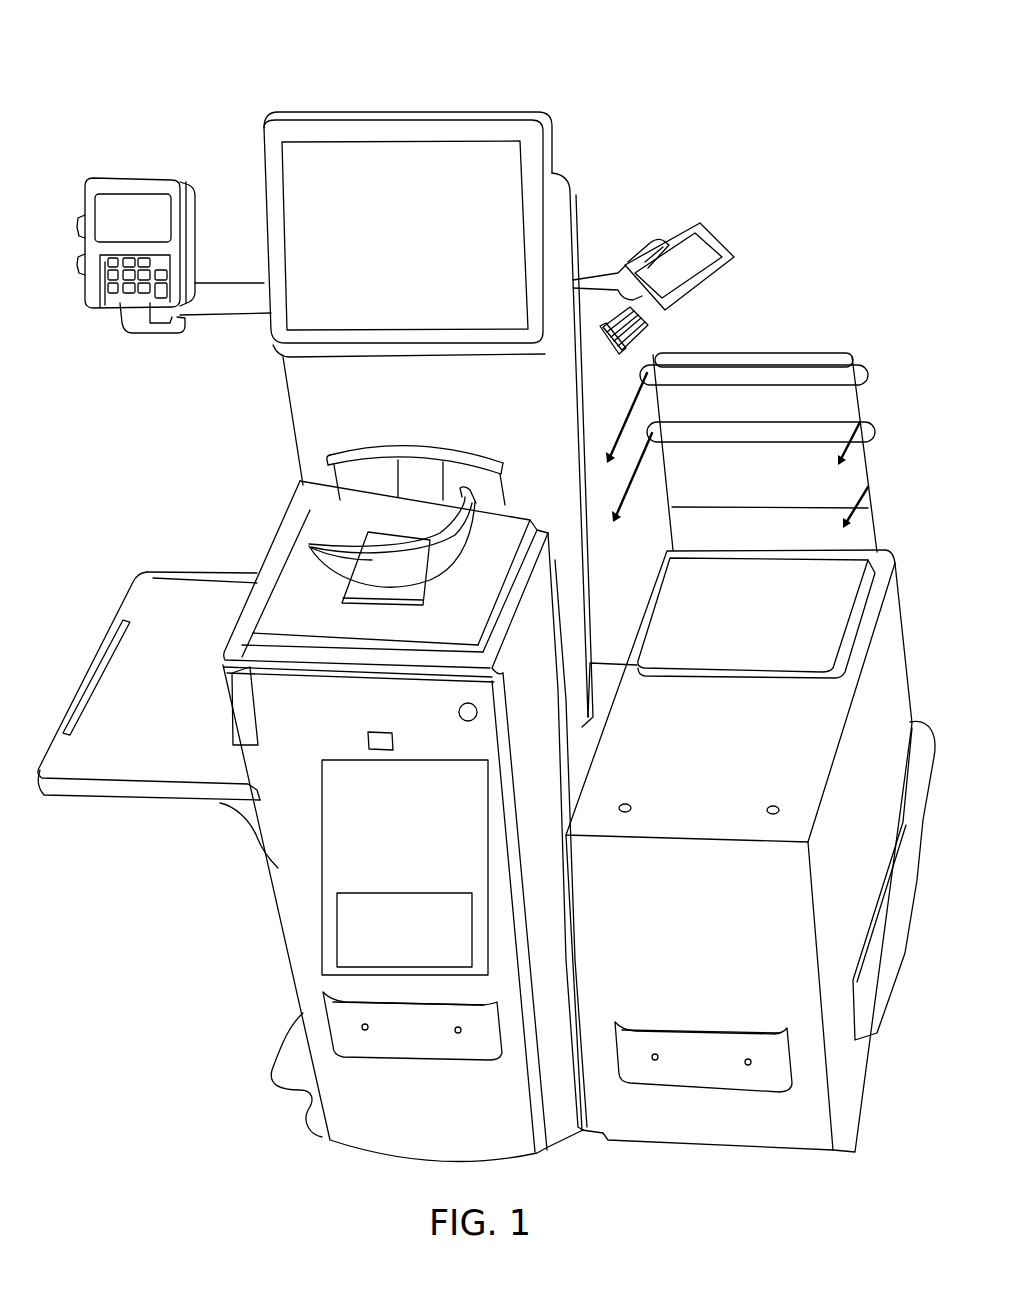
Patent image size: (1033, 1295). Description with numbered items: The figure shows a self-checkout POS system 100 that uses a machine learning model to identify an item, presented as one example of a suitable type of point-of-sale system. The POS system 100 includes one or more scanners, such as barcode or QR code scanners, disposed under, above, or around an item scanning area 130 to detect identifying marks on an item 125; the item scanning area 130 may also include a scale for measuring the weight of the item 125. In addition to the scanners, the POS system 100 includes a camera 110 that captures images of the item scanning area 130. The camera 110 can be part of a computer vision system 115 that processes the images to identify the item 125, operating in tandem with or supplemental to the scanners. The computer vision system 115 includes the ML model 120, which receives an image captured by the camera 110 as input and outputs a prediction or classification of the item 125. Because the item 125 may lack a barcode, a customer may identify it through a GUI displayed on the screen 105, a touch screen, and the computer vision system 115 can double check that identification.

The POS system 100 is at (692, 108).
The screen 105 is at (402, 113).
The camera 110 is at (720, 242).
The computer vision system 115 is at (430, 879).
The ML model 120 is at (381, 962).
The item 125 is at (367, 560).
The item scanning area 130 is at (293, 593).